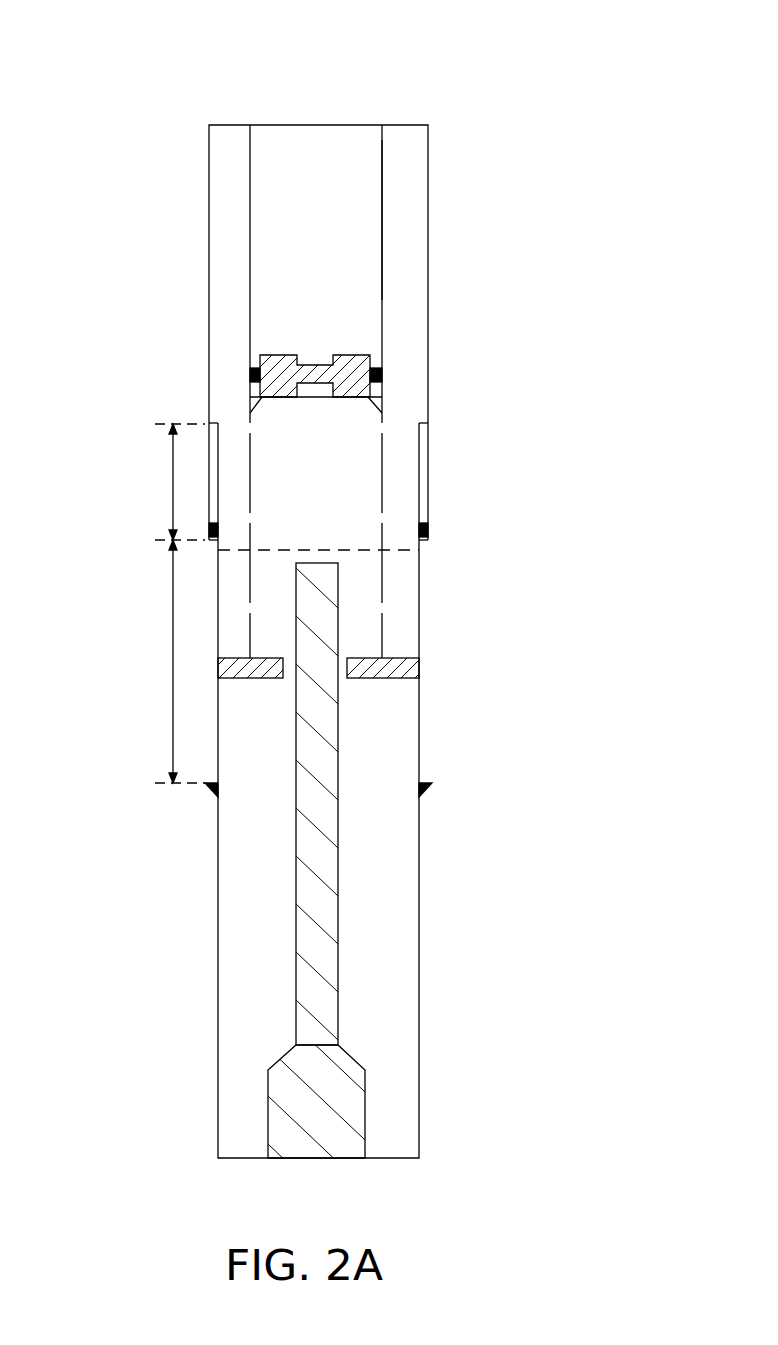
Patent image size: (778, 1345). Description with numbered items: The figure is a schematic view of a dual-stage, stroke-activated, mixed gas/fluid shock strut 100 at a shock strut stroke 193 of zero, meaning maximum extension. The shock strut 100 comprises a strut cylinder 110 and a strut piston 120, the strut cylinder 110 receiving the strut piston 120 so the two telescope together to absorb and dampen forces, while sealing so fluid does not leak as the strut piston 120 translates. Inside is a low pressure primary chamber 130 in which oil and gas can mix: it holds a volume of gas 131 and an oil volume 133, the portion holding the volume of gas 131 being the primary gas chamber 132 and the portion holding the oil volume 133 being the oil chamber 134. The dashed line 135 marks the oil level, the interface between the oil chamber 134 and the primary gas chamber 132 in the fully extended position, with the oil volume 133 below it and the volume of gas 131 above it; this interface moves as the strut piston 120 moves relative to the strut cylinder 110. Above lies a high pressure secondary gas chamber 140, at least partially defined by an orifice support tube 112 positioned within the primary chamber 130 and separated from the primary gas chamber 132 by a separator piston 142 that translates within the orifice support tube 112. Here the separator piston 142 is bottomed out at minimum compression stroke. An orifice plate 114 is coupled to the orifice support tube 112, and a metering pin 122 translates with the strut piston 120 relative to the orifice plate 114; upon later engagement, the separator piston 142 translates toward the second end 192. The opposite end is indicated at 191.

The shock strut 100 is at (110, 100).
The strut cylinder 110 is at (209, 328).
The orifice support tube 112 is at (383, 228).
The orifice plate 114 is at (403, 662).
The strut piston 120 is at (218, 940).
The metering pin 122 is at (297, 882).
The primary chamber 130 is at (403, 470).
The volume of gas 131 is at (232, 408).
The primary gas chamber 132 is at (412, 328).
The oil volume 133 is at (274, 761).
The oil chamber 134 is at (395, 735).
The dashed line 135 is at (275, 548).
The secondary gas chamber 140 is at (350, 197).
The separator piston 142 is at (372, 360).
The first direction 191 is at (248, 1168).
The second end 192 is at (347, 100).
The shock strut stroke 193 is at (172, 492).